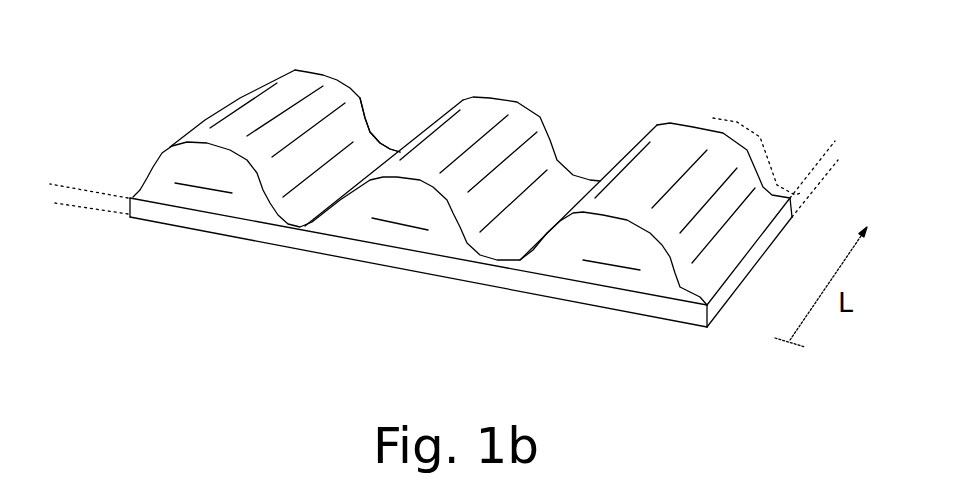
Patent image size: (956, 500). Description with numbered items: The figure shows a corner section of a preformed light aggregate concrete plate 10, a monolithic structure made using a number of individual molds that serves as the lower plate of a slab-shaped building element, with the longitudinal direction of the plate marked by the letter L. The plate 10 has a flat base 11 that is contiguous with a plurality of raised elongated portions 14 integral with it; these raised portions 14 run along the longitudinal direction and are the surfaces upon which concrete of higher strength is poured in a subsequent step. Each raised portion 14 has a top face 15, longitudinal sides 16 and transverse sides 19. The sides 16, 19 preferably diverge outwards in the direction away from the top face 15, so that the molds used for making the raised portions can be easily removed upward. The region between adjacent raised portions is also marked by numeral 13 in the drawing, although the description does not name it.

The preformed light aggregate concrete plate 10 is at (444, 186).
The base 11 is at (444, 252).
The groove / valley 13 is at (375, 129).
The raised elongated portions 14 is at (468, 157).
The top face 15 is at (668, 190).
The longitudinal sides 16 is at (722, 290).
The transverse sides 19 is at (635, 252).